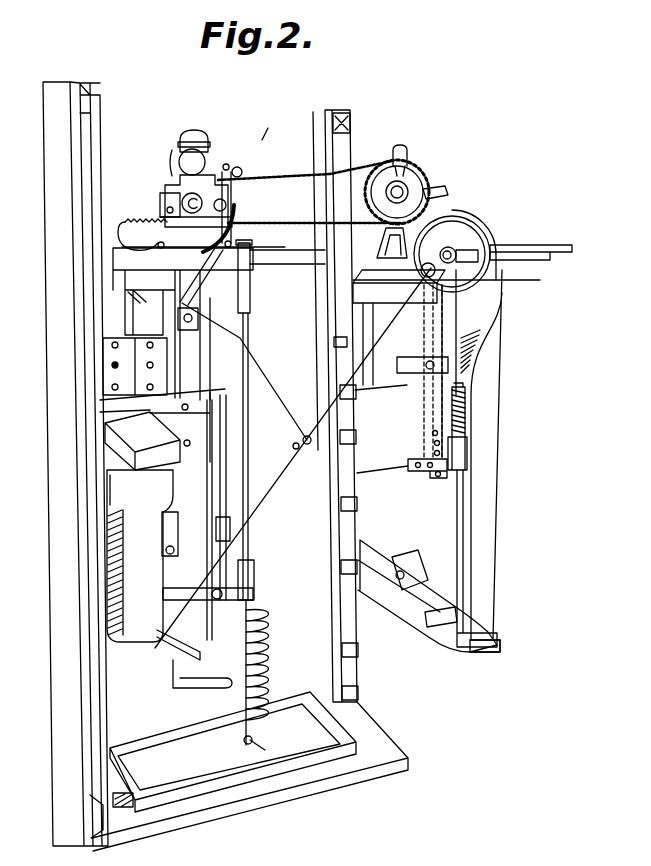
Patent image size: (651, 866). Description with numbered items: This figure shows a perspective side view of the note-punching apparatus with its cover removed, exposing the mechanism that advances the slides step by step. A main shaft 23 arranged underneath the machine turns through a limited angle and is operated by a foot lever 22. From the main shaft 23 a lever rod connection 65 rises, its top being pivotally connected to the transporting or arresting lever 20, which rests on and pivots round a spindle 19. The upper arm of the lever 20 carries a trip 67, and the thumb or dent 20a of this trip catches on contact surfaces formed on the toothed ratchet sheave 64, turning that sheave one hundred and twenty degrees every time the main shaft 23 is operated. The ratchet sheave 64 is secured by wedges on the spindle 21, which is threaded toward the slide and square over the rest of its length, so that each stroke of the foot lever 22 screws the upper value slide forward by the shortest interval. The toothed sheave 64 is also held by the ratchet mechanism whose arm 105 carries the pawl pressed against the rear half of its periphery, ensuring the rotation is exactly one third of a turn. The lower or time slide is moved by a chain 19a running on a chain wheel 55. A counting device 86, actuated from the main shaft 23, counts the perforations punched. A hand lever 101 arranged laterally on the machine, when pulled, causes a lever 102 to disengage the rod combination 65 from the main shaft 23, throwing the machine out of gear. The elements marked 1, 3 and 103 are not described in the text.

The frame 1 is at (505, 293).
The handle 3 is at (406, 150).
The spindle 19 is at (240, 170).
The chain 19a is at (348, 217).
The transporting or arresting lever 20 is at (185, 130).
The thumb or dent 20a is at (232, 165).
The spindle 21 is at (178, 148).
The foot lever 22 is at (397, 562).
The main shaft 23 is at (190, 593).
The chain wheel 55 is at (422, 190).
The ratchet sheave 64 is at (200, 134).
The lever rod connection 65 is at (252, 580).
The trip 67 is at (225, 160).
The counting device 86 is at (408, 472).
The hand lever 101 is at (273, 462).
The lever 102 is at (167, 647).
The pin 103 is at (250, 142).
The ratchet mechanism arm 105 is at (228, 206).